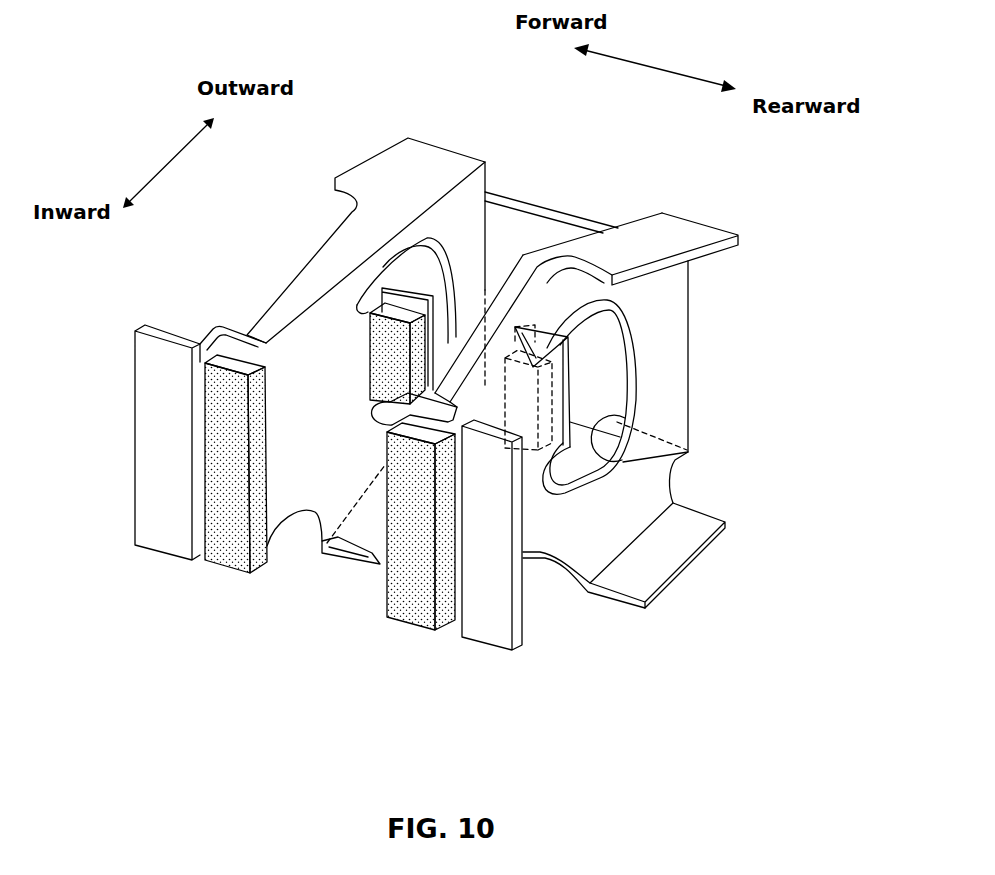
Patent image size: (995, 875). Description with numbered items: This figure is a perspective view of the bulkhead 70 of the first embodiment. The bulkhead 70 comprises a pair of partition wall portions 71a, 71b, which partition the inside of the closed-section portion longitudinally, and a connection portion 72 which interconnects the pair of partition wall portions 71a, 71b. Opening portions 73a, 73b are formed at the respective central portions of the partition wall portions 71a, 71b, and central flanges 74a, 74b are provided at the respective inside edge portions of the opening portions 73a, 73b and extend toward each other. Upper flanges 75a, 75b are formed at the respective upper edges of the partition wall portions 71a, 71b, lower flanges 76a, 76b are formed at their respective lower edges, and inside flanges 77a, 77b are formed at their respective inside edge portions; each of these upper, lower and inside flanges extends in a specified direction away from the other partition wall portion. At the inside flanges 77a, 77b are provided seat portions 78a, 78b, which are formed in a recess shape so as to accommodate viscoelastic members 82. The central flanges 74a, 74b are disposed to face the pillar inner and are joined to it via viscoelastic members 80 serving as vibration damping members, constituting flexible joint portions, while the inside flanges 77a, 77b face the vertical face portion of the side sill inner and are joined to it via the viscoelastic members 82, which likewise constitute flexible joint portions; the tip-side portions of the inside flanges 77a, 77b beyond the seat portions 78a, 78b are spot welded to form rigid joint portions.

The bulkhead 70 is at (468, 120).
The partition wall portion 71a is at (478, 186).
The partition wall portion 71b is at (672, 358).
The connection portion 72 is at (572, 217).
The opening portion 73a is at (412, 252).
The opening portion 73b is at (680, 460).
The central flange 74a is at (412, 288).
The central flange 74b is at (563, 330).
The upper flange 75a is at (375, 173).
The upper flange 75b is at (683, 232).
The lower flange 76a is at (322, 541).
The lower flange 76b is at (660, 553).
The inside flange 77a is at (163, 525).
The inside flange 77b is at (483, 623).
The seat portion 78a is at (222, 347).
The seat portion 78b is at (372, 407).
The viscoelastic member 80 is at (383, 355).
The viscoelastic member 82 is at (230, 547).